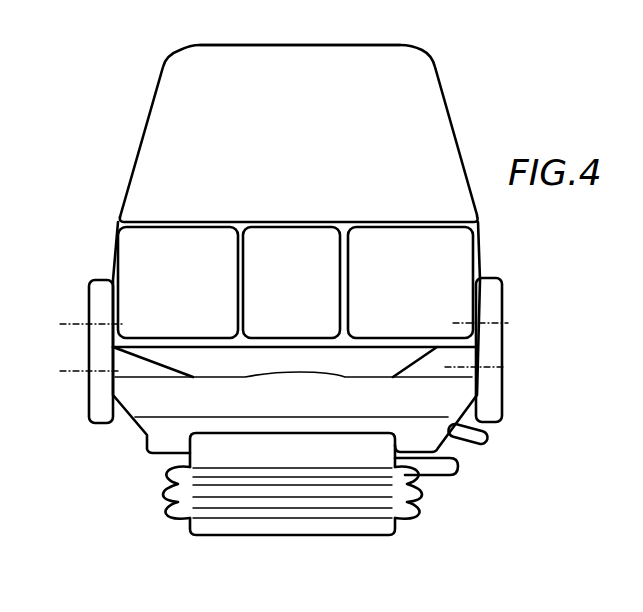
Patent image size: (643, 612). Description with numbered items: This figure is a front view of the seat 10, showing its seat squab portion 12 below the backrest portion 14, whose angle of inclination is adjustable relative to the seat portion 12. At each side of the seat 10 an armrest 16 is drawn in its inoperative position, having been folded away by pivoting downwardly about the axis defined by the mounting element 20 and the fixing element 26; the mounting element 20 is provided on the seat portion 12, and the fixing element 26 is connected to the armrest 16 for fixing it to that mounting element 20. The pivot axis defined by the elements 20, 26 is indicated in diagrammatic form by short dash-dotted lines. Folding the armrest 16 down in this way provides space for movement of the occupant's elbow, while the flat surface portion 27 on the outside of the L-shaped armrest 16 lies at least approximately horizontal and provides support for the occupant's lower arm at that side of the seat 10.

The seat 10 is at (474, 129).
The seat squab portion 12 is at (156, 403).
The backrest portion 14 is at (181, 125).
The armrest 16 is at (95, 361).
The mounting element 20 is at (295, 304).
The fixing element 26 is at (77, 326).
The flat surface portion 27 is at (96, 273).